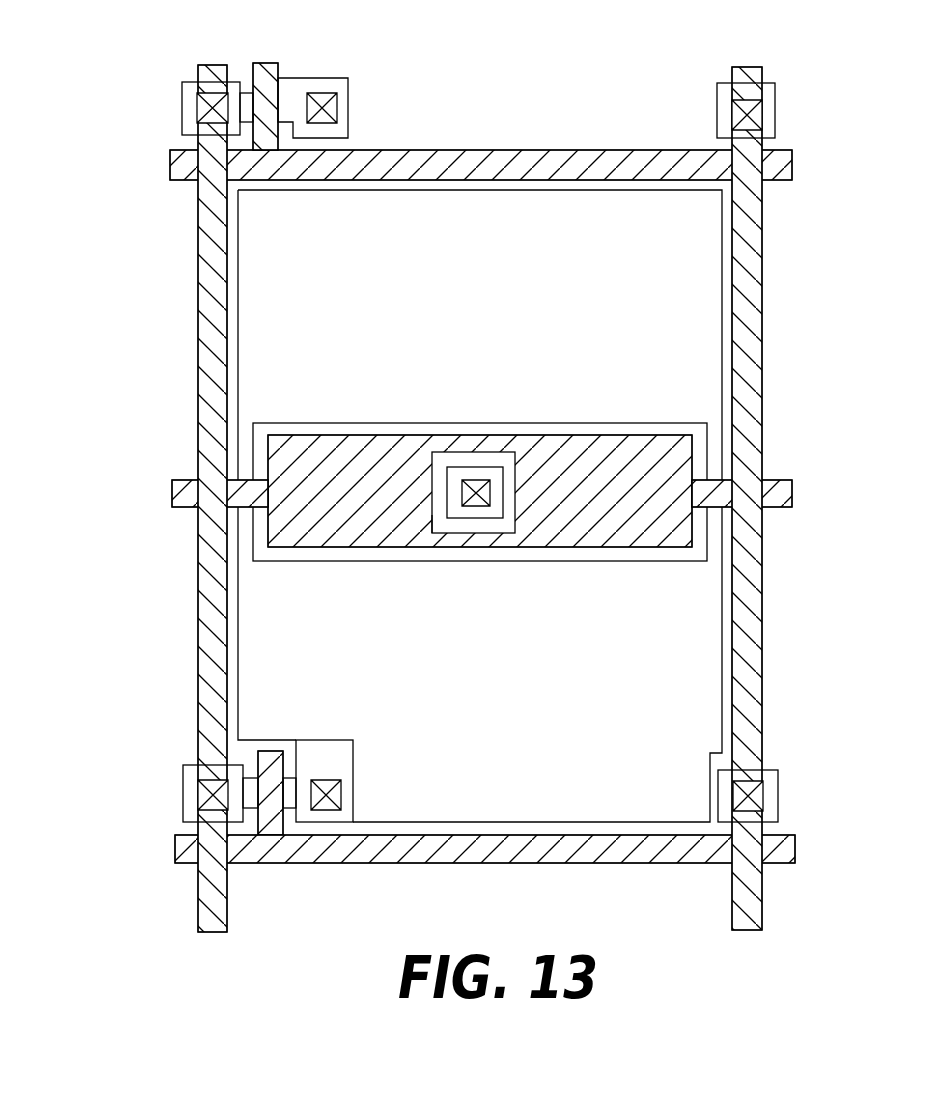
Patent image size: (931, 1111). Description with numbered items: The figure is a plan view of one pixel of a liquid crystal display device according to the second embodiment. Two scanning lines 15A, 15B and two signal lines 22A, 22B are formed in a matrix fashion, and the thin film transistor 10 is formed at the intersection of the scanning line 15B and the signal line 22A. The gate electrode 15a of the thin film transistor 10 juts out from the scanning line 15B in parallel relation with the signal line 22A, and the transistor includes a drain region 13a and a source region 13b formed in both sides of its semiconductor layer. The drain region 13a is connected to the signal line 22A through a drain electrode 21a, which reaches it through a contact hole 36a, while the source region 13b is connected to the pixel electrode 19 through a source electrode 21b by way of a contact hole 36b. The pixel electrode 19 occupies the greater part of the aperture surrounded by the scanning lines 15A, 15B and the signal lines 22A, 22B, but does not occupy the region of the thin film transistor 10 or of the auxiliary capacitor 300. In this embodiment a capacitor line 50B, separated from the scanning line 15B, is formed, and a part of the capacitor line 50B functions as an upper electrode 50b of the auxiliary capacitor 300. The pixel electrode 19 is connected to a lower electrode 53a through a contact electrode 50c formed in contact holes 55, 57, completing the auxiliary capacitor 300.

The thin film transistor 10 is at (352, 715).
The drain region 13a is at (253, 778).
The source region 13b is at (290, 100).
The scanning line 15A is at (177, 168).
The scanning line 15B is at (180, 857).
The gate electrode 15a is at (278, 752).
The pixel electrode 19 is at (722, 250).
The drain electrode 21a is at (186, 770).
The source electrode 21b is at (352, 750).
The signal line 22A is at (200, 302).
The signal line 22B is at (762, 398).
The contact hole 36a is at (215, 808).
The contact hole 36b is at (342, 800).
The capacitor line 50B is at (778, 480).
The upper electrode 50b is at (385, 450).
The contact electrode 50c is at (428, 522).
The lower electrode 53a is at (318, 423).
The contact hole 55 is at (468, 467).
The contact hole 57 is at (488, 478).
The auxiliary capacitor 300 is at (526, 583).